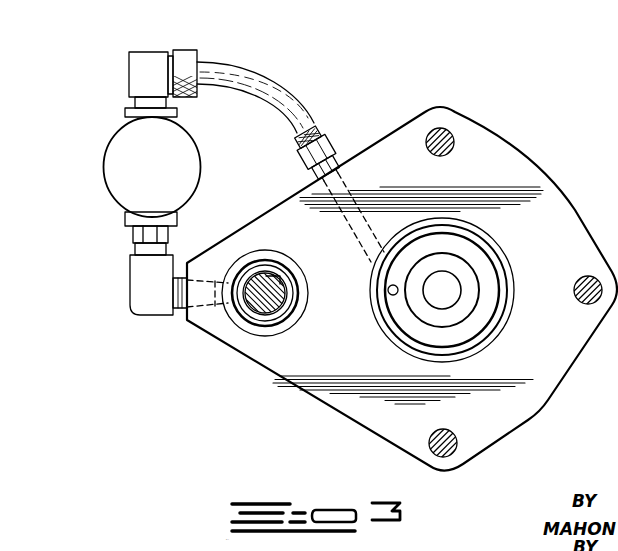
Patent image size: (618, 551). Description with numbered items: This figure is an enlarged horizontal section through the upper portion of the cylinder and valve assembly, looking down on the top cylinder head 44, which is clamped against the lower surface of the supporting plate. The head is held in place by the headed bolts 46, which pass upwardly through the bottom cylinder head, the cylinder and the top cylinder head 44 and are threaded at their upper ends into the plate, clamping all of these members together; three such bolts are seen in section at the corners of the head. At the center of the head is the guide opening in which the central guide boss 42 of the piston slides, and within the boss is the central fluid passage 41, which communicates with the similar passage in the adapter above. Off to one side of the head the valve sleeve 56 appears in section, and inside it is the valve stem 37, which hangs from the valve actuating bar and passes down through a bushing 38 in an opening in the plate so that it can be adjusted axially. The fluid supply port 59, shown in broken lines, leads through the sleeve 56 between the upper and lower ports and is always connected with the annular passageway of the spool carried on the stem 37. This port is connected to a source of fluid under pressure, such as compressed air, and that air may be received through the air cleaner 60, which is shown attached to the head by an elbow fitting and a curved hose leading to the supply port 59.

The valve stem 37 is at (280, 305).
The bushing 38 is at (278, 280).
The fluid passage 41 is at (437, 298).
The central guide boss 42 is at (470, 282).
The top cylinder head 44 is at (533, 178).
The headed bolts 46 is at (444, 132).
The valve sleeve 56 is at (257, 329).
The fluid supply port 59 is at (200, 307).
The air cleaner 60 is at (112, 164).